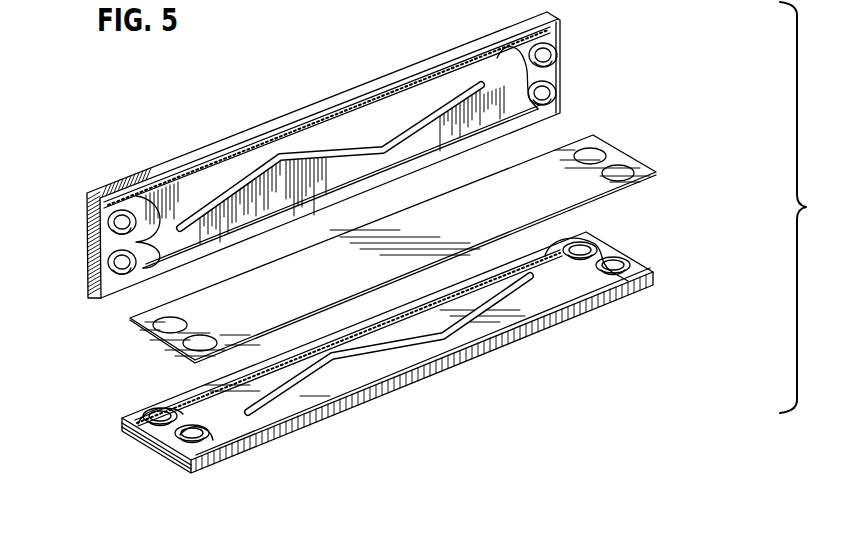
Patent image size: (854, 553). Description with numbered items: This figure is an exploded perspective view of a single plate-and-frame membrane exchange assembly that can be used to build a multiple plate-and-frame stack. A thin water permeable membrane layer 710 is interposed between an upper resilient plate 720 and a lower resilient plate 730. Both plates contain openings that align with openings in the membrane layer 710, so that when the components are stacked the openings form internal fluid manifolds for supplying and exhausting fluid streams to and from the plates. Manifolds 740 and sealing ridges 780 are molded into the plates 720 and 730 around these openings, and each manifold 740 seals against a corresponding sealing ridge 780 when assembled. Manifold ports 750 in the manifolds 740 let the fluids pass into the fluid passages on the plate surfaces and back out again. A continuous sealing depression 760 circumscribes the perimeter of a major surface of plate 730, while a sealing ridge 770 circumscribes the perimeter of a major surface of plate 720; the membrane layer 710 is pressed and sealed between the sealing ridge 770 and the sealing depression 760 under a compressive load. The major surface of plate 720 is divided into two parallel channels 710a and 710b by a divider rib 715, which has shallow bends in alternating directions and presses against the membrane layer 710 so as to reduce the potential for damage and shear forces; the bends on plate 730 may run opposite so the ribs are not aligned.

The water permeable membrane layer 710 is at (628, 155).
The parallel channel 710a is at (343, 140).
The parallel channel 710b is at (323, 177).
The divider rib 715 is at (408, 125).
The resilient plate 720 is at (359, 262).
The resilient plate 730 is at (395, 366).
The manifold 740 is at (110, 192).
The manifold port 750 is at (498, 58).
The continuous sealing depression 760 is at (653, 278).
The sealing ridge 770 is at (103, 280).
The sealing ridge 780 is at (560, 53).